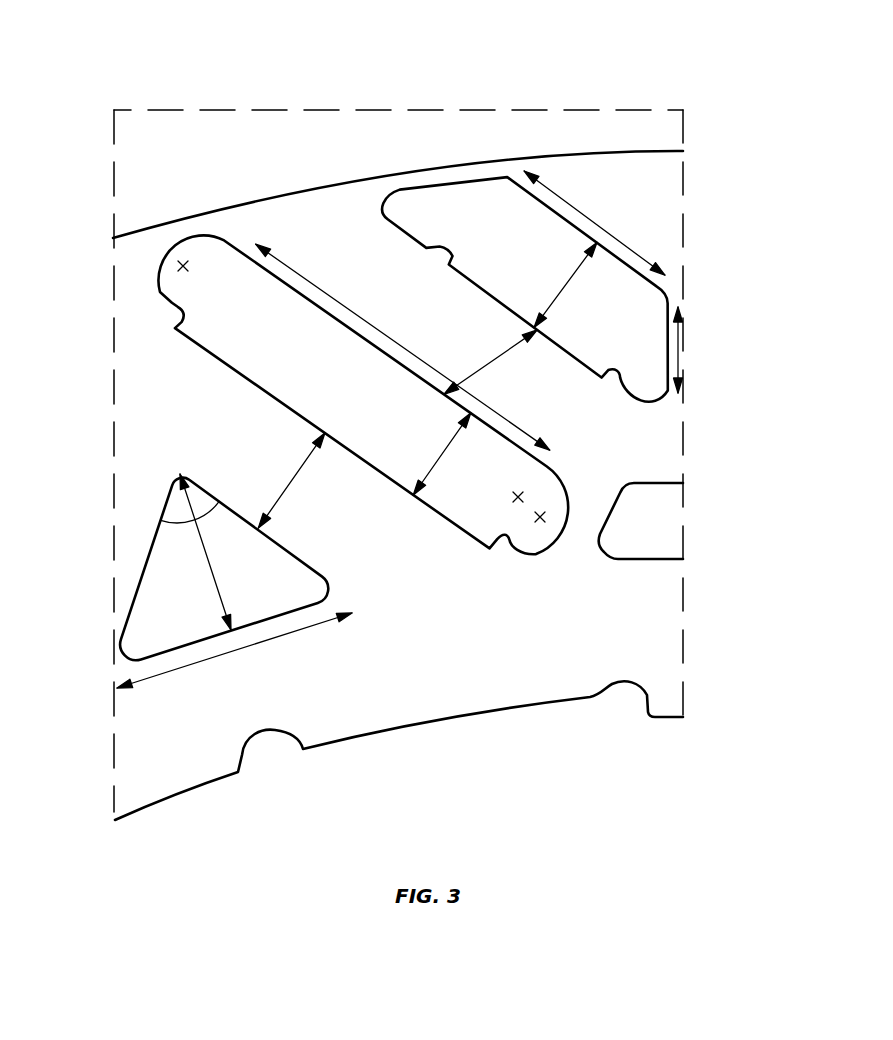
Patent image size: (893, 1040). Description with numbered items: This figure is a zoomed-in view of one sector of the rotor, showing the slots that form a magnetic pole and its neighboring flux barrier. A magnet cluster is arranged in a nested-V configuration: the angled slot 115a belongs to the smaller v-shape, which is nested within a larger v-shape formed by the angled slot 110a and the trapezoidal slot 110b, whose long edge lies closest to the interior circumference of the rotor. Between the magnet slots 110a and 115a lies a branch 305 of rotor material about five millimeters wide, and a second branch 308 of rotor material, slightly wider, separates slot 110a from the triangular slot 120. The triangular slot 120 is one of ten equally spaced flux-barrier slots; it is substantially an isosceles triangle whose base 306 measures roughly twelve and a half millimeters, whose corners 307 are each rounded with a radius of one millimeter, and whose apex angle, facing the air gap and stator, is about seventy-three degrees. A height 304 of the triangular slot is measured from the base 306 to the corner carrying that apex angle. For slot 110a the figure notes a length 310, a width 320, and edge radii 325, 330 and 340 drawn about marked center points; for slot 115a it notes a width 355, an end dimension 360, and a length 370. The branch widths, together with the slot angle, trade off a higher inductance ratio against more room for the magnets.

The angled slot 110a is at (226, 240).
The trapezoidal slot 110b is at (630, 560).
The angled slot 115a is at (462, 188).
The triangular slot 120 is at (143, 667).
The triangular opening height 304 is at (212, 580).
The branch 305 is at (478, 357).
The base 306 is at (208, 662).
The corner 307 is at (173, 491).
The branch 308 is at (290, 487).
The slot length dimension 310 is at (380, 330).
The slot width dimension 320 is at (450, 443).
The edge radius 325 is at (185, 263).
The edge radius 330 is at (523, 498).
The edge radius 340 is at (544, 520).
The slot width dimension 355 is at (570, 284).
The slot end dimension 360 is at (678, 340).
The slot length dimension 370 is at (573, 200).